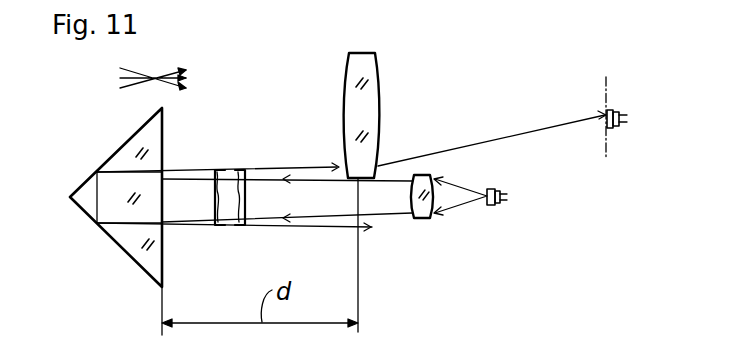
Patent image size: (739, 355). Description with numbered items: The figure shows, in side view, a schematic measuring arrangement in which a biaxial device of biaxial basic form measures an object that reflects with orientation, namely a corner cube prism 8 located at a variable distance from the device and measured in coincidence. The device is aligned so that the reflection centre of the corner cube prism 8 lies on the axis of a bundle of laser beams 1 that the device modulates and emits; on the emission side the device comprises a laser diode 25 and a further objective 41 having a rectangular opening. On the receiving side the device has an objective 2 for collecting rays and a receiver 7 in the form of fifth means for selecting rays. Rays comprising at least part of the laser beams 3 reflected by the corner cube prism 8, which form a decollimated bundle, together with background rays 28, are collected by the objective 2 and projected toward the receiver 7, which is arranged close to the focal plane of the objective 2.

The bundle of laser beams 1 is at (252, 210).
The objective 2 is at (368, 62).
The reflected laser beams 3 is at (216, 168).
The receiver 7 is at (615, 111).
The corner cube prism 8 is at (128, 234).
The laser diode 25 is at (503, 185).
The background rays 28 is at (176, 88).
The further objective 41 is at (420, 215).